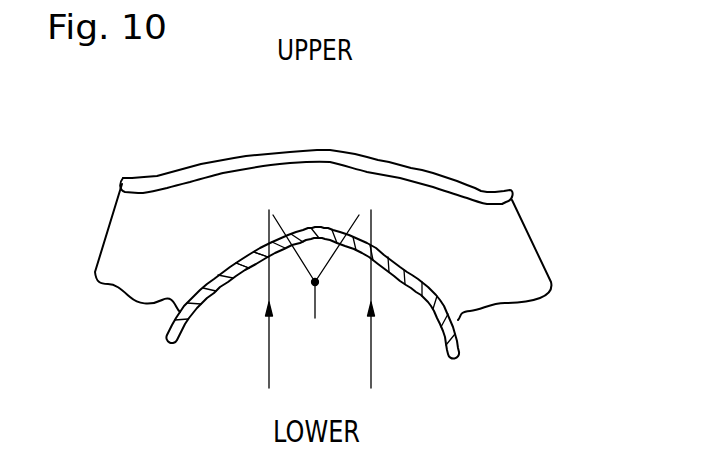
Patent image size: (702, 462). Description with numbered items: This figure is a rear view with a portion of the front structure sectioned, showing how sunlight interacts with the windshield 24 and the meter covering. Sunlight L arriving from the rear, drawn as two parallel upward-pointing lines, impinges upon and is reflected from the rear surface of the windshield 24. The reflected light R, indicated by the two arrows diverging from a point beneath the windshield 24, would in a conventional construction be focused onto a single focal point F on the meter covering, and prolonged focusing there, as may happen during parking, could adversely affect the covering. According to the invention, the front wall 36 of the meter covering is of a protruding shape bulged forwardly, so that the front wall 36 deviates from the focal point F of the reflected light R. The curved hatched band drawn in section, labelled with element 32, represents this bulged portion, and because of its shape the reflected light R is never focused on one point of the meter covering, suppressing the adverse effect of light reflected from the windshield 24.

The windshield 24 is at (370, 160).
The curved blade 32 is at (458, 338).
The front wall 36 is at (227, 264).
The reflected light R is at (352, 236).
The focal point F is at (316, 285).
The sunlight L is at (269, 361).